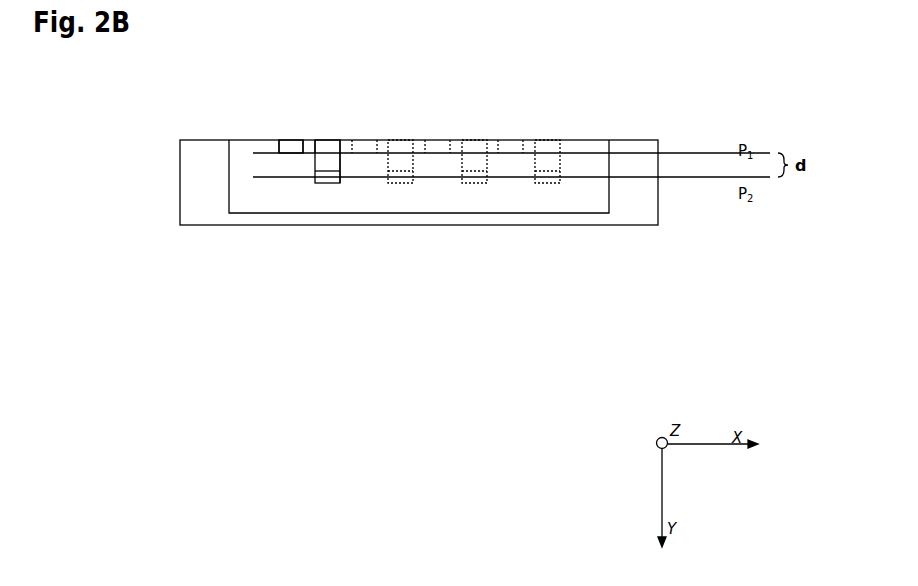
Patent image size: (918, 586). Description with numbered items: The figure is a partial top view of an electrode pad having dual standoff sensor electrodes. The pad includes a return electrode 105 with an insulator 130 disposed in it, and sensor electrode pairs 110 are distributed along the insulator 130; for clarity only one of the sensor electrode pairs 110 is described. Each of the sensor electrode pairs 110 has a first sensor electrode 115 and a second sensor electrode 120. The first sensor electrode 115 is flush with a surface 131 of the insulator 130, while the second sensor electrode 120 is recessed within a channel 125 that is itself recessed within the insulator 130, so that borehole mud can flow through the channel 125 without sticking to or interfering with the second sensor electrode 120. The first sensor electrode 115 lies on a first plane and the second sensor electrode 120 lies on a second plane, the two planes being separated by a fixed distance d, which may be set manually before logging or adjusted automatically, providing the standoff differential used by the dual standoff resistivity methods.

The return electrode 105 is at (180, 162).
The sensor electrode pair 110 is at (340, 136).
The first sensor electrode 115 is at (292, 152).
The second sensor electrode 120 is at (328, 175).
The channel 125 is at (340, 153).
The insulator 130 is at (590, 152).
The surface of the insulator 131 is at (570, 142).